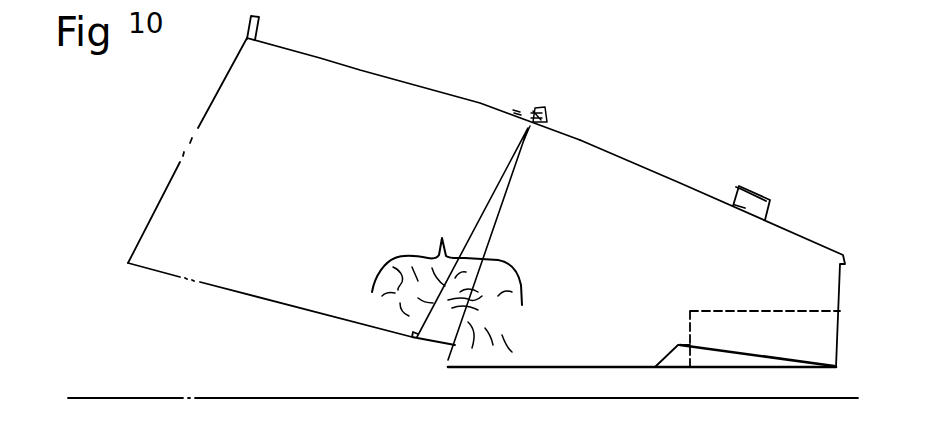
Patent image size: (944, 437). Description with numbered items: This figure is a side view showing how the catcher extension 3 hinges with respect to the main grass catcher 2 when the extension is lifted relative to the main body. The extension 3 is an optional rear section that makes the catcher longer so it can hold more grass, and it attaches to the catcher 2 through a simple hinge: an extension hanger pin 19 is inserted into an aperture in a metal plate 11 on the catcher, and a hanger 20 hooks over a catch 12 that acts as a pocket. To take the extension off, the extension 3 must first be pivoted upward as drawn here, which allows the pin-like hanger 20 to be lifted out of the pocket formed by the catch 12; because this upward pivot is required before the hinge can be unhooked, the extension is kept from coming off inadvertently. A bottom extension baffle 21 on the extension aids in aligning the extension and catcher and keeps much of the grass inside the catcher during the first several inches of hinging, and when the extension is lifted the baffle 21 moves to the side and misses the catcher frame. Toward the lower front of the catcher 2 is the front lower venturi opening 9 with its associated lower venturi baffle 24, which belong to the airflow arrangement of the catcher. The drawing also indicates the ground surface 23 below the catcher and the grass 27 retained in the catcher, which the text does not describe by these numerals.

The grass catcher 2 is at (638, 163).
The catcher extension 3 is at (398, 80).
The front lower venturi opening 9 is at (712, 357).
The metal plate 11 is at (565, 122).
The catch 12 is at (545, 82).
The extension hanger pin 19 is at (552, 80).
The hanger 20 is at (568, 92).
The bottom extension baffle 21 is at (436, 340).
The ground surface 23 is at (181, 394).
The lower venturi baffle 24 is at (733, 352).
The bulk material 27 is at (442, 238).